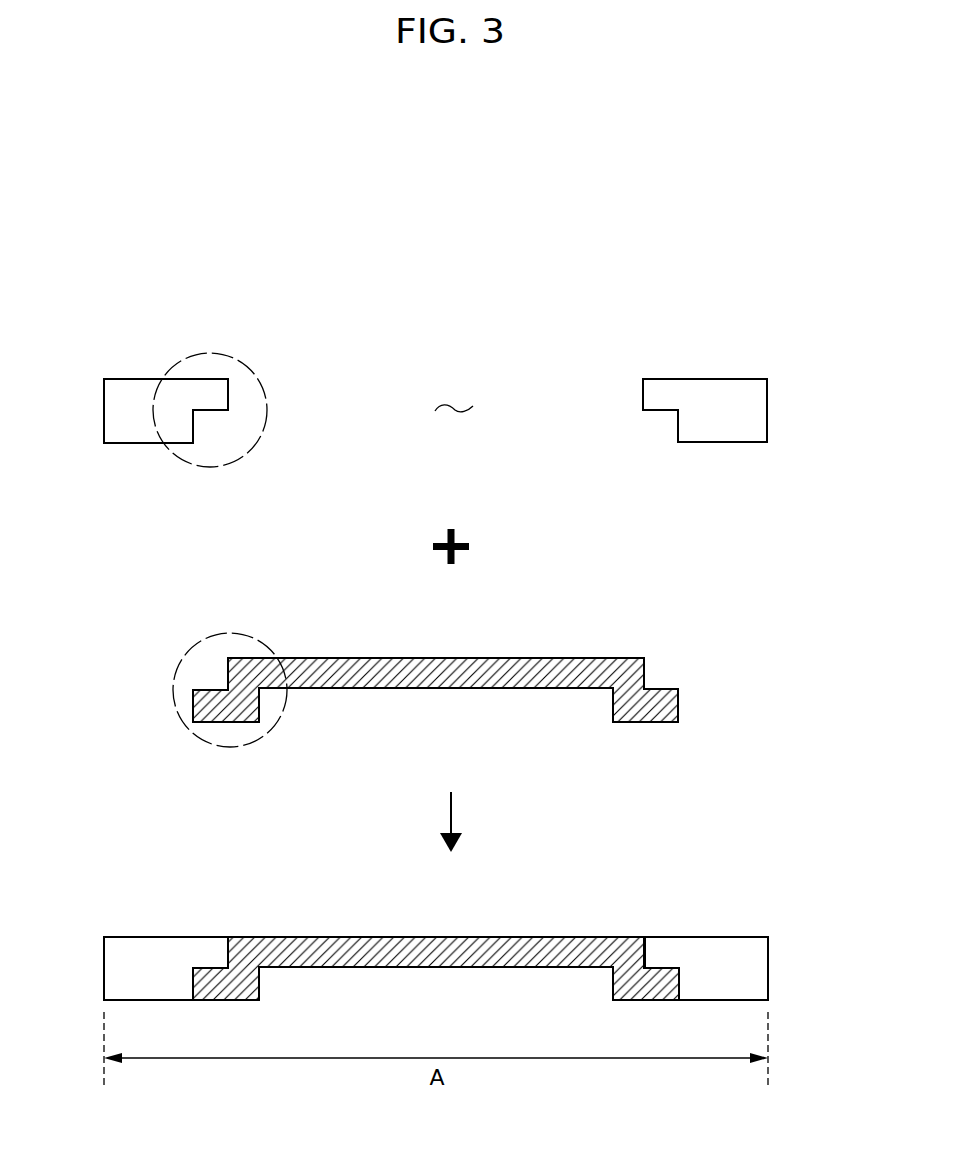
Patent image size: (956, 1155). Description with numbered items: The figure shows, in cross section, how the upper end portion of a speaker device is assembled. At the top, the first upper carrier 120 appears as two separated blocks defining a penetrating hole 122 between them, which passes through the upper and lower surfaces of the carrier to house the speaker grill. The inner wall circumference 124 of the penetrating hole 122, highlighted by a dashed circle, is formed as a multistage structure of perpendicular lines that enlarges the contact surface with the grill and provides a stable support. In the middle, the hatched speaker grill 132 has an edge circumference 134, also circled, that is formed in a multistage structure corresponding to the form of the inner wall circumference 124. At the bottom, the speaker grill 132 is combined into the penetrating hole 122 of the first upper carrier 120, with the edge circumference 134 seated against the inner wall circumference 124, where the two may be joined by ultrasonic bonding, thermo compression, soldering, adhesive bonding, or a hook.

The first upper carrier 120 is at (112, 415).
The penetrating hole 122 is at (460, 401).
The inner wall circumference 124 is at (247, 369).
The speaker grill 132 is at (583, 663).
The edge circumference 134 is at (187, 656).